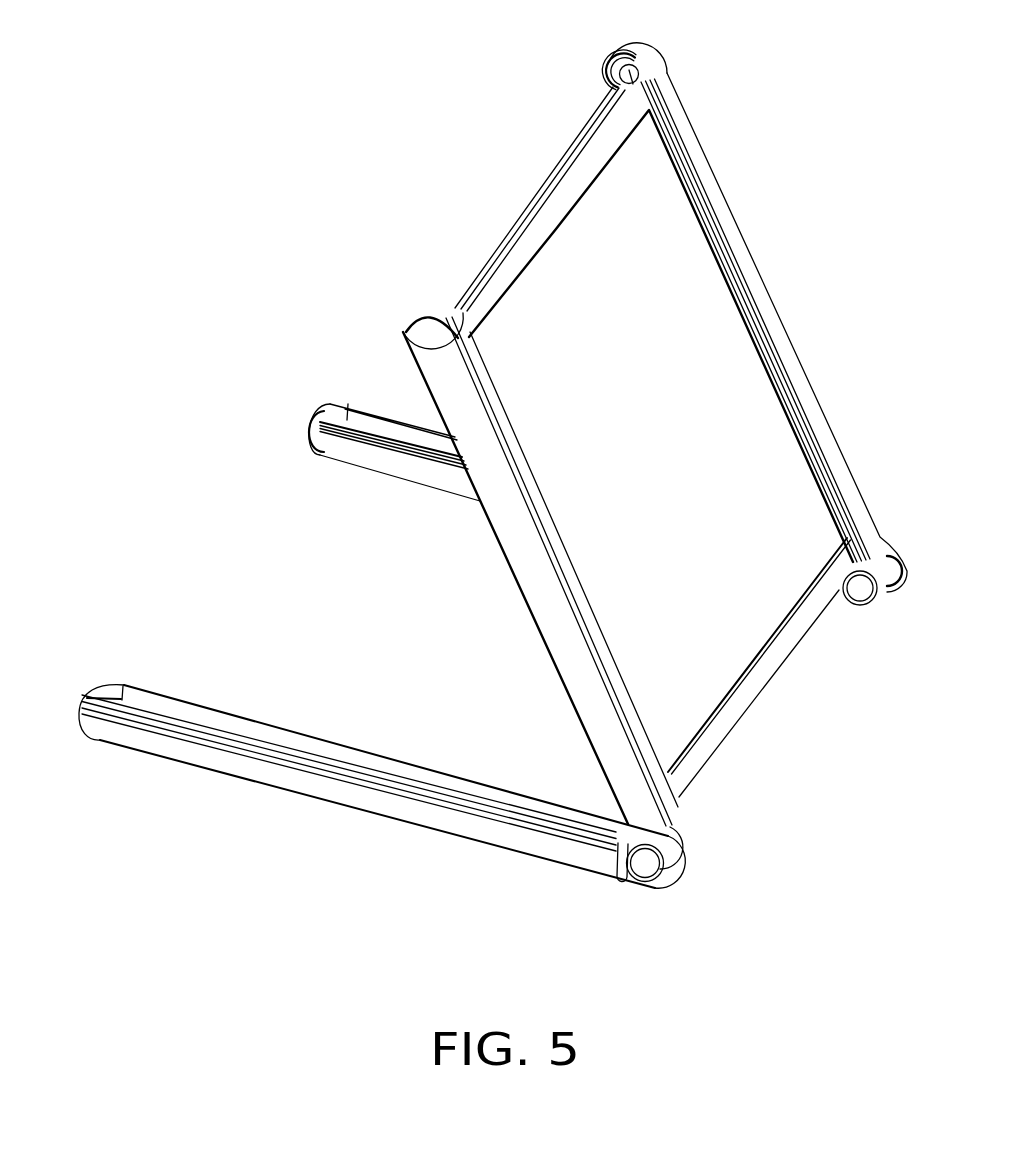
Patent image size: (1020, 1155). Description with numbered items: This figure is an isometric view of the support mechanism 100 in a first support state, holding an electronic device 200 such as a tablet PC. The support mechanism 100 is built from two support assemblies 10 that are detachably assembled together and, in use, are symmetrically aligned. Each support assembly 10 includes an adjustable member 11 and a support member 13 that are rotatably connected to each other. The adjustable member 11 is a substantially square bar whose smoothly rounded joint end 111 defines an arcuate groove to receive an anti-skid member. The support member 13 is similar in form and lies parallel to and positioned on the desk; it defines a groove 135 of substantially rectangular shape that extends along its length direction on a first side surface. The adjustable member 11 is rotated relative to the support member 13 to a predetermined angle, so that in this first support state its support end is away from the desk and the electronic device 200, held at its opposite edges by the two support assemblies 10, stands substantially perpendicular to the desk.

The support mechanism 100 is at (713, 139).
The joint end 111 is at (612, 80).
The electronic device 200 is at (595, 280).
The support assembly 10 is at (322, 396).
The adjustable member 11 is at (671, 803).
The support member 13 is at (247, 762).
The groove 135 is at (348, 452).